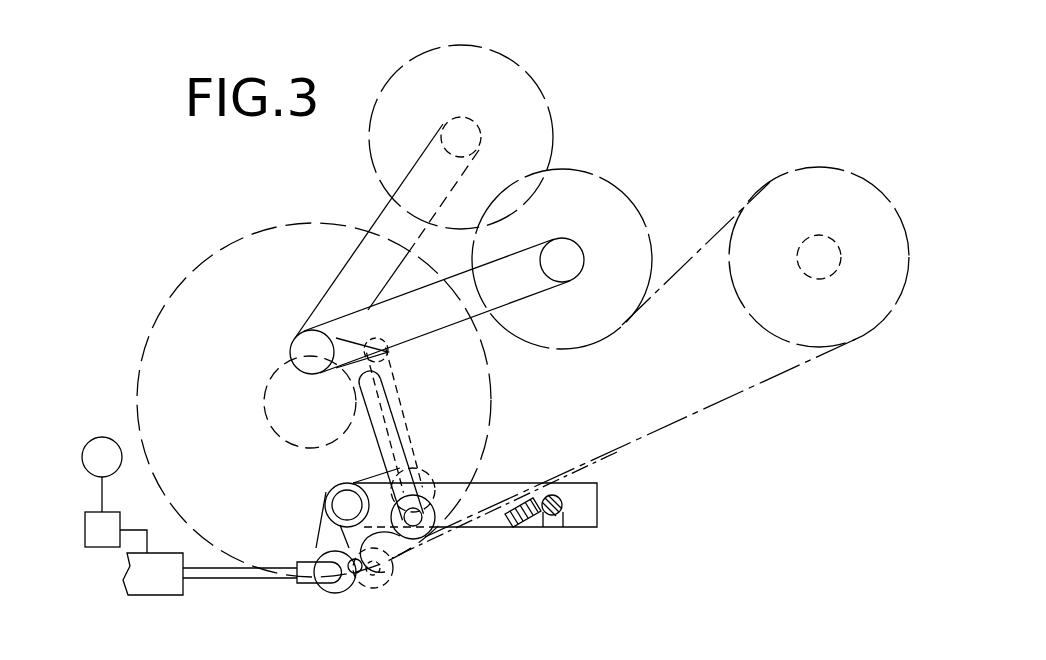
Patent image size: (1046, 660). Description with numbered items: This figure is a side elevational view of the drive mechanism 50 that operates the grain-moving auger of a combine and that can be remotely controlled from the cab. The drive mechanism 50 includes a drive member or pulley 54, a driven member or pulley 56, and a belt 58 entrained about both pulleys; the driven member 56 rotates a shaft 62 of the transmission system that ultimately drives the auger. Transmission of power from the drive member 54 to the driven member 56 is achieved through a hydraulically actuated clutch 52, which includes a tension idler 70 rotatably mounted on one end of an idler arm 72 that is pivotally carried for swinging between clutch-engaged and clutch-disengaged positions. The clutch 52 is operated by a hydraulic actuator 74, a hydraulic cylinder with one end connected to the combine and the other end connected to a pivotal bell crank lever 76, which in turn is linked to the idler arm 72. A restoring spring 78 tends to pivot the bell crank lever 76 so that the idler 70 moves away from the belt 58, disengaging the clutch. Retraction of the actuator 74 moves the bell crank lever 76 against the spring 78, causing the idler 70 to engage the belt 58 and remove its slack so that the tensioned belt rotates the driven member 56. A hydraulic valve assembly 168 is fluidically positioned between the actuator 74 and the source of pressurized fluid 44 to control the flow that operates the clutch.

The source of pressurized fluid 44 is at (104, 435).
The drive mechanism 50 is at (708, 148).
The hydraulically actuated clutch 52 is at (603, 172).
The drive member 54 is at (836, 190).
The driven member 56 is at (193, 285).
The belt 58 is at (775, 378).
The shaft 62 is at (290, 410).
The idler 70 is at (532, 101).
The idler arm 72 is at (522, 290).
The hydraulic actuator 74 is at (170, 580).
The bell crank lever 76 is at (327, 542).
The restoring spring 78 is at (527, 522).
The hydraulic valve assembly 168 is at (90, 523).